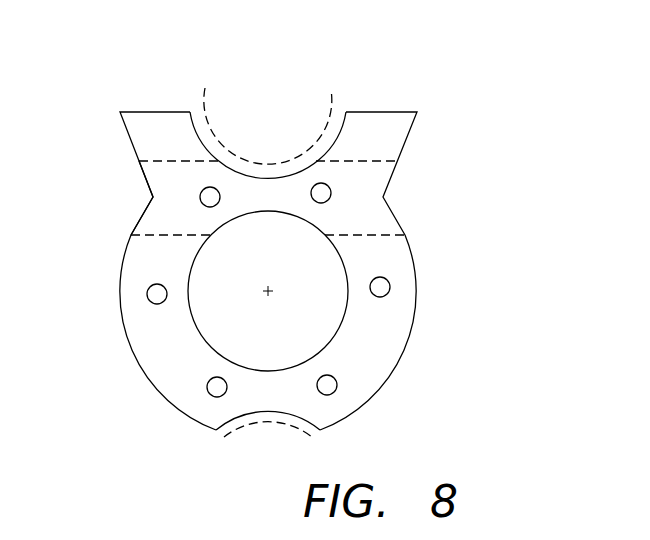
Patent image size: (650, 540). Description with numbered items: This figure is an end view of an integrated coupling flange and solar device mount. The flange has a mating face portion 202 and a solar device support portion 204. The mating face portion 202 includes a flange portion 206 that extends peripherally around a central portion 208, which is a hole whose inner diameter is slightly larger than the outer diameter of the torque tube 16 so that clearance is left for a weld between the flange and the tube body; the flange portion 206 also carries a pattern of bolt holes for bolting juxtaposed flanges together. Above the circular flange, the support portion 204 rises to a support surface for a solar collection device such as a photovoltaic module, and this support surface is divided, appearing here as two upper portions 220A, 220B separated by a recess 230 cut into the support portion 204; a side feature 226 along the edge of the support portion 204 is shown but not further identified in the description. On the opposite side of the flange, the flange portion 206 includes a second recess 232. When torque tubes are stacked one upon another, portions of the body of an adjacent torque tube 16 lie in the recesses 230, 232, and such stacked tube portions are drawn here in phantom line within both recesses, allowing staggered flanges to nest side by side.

The torque tube 16 is at (330, 101).
The mating face portion 202 is at (396, 378).
The solar device support portion 204 is at (382, 47).
The flange portion 206 is at (418, 282).
The central portion 208 is at (282, 348).
The first mounting arm 220A is at (167, 110).
The second mounting arm 220B is at (372, 110).
The side notch 226 is at (142, 207).
The recess 230 is at (273, 152).
The recess 232 is at (269, 428).